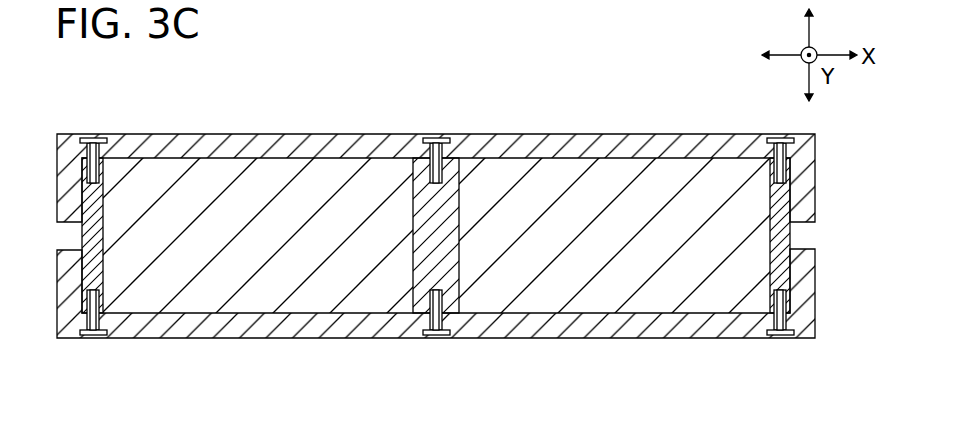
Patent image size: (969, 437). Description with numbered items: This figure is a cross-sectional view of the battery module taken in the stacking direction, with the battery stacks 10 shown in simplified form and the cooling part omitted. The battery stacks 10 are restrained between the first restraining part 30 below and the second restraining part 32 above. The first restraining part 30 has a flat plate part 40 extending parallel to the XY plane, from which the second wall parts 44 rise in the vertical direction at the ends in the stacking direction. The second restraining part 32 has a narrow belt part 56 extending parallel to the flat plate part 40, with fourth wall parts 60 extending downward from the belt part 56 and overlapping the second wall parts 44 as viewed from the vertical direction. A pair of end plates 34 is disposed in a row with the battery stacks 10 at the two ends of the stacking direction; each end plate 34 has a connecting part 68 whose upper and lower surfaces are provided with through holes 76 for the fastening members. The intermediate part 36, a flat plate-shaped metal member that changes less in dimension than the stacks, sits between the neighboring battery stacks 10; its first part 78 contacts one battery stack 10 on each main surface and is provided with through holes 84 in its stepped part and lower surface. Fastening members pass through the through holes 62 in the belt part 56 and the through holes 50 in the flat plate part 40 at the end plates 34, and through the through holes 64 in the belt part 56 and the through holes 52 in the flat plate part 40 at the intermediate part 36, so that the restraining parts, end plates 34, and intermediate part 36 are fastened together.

The battery stack 10 is at (648, 305).
The first restraining part 30 is at (817, 328).
The second restraining part 32 is at (816, 147).
The end plate 34 is at (792, 237).
The intermediate part 36 is at (460, 292).
The flat plate part 40 is at (712, 339).
The second wall part 44 is at (815, 271).
The through hole 50 is at (113, 338).
The through hole 52 is at (455, 338).
The belt part 56 is at (580, 134).
The fourth wall part 60 is at (815, 190).
The through hole 62 is at (108, 137).
The through hole 64 is at (456, 137).
The connecting part 68 is at (768, 200).
The through hole 76 is at (103, 168).
The first part 78 is at (413, 201).
The through hole 84 is at (452, 165).